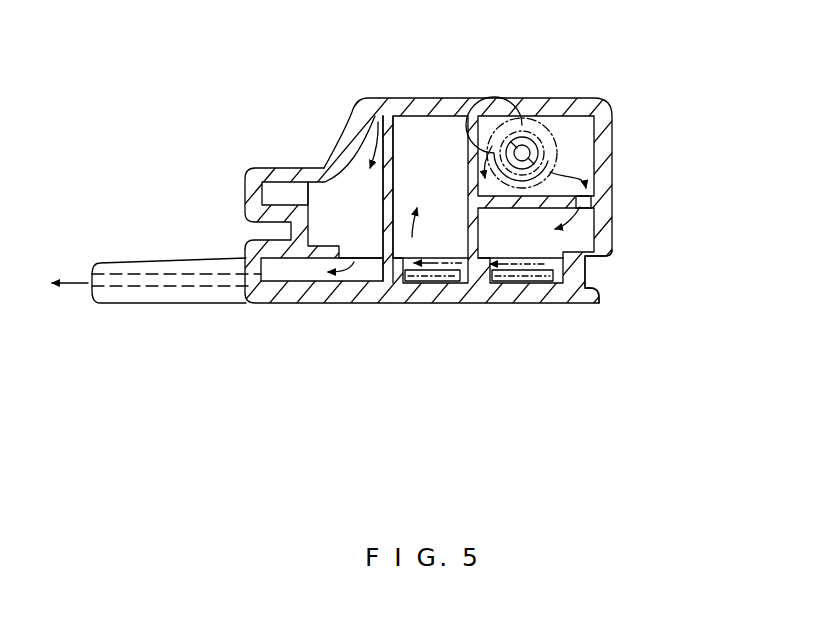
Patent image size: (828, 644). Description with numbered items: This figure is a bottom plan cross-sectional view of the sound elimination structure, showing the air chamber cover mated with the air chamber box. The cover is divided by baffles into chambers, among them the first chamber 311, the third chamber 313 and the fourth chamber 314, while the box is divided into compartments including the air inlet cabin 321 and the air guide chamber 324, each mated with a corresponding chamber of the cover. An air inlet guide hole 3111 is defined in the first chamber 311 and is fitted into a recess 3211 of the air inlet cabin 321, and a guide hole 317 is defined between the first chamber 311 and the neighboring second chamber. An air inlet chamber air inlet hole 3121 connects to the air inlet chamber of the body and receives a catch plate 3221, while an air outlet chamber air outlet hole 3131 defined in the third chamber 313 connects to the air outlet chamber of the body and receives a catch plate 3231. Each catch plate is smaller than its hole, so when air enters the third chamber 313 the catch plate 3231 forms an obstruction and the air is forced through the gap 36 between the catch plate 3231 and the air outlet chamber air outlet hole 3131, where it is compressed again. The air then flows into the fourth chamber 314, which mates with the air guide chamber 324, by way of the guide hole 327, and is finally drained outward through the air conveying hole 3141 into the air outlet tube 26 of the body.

The air outlet tube 26 is at (128, 272).
The first chamber 311 is at (400, 183).
The air inlet cabin 321 is at (567, 122).
The third chamber 313 is at (402, 138).
The air guide chamber 324 is at (390, 156).
The fourth chamber 314 is at (325, 184).
The guide hole 327 is at (352, 110).
The air conveying hole 3141 is at (361, 221).
The gap 36 is at (388, 285).
The air outlet chamber air outlet hole 3131 is at (417, 266).
The catch plate 3231 is at (429, 271).
The recess 3211 is at (557, 158).
The air inlet guide hole 3111 is at (541, 151).
The guide hole 317 is at (590, 204).
The catch plate 3221 is at (521, 273).
The air inlet chamber air inlet hole 3121 is at (560, 277).